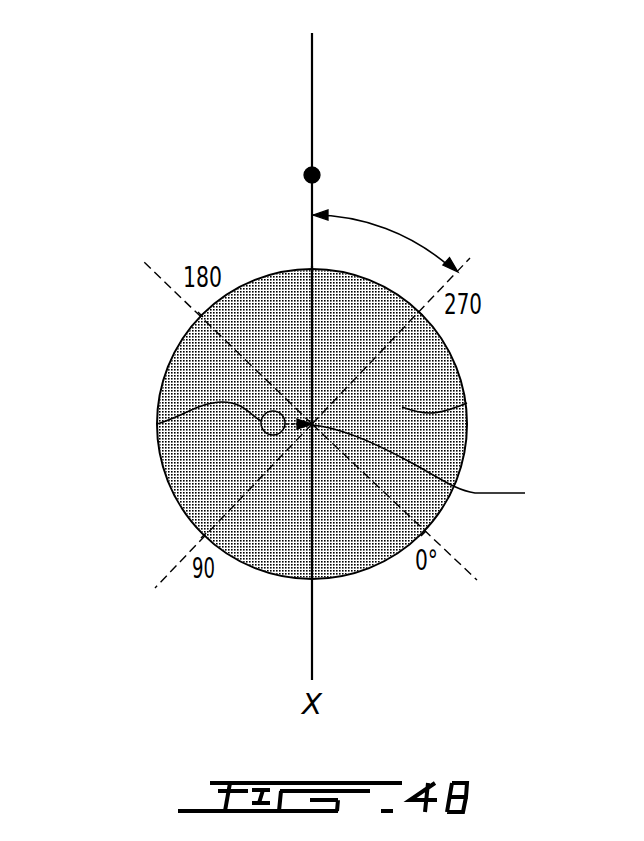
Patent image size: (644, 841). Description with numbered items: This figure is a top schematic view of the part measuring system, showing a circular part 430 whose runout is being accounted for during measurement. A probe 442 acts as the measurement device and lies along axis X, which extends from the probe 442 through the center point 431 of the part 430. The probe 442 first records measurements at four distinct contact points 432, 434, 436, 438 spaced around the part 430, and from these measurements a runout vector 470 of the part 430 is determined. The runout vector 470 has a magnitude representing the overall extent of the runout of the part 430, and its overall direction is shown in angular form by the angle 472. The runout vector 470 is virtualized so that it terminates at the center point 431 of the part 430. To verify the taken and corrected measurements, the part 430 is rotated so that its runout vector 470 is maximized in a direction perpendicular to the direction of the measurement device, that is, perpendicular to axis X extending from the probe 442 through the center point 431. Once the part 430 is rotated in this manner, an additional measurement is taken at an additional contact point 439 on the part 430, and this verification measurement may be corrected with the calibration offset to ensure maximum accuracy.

The part 430 is at (467, 403).
The center point 431 is at (439, 469).
The contact point 432 is at (424, 533).
The contact point 434 is at (421, 313).
The contact point 436 is at (201, 316).
The contact point 438 is at (204, 536).
The additional contact point 439 is at (312, 267).
The probe 442 is at (312, 91).
The runout vector 470 is at (157, 424).
The angular direction of runout vector 472 is at (391, 232).